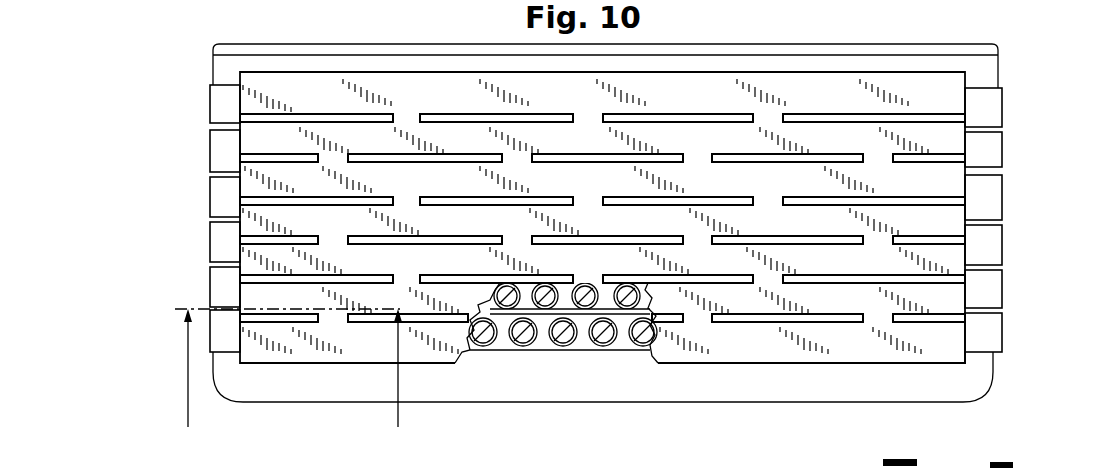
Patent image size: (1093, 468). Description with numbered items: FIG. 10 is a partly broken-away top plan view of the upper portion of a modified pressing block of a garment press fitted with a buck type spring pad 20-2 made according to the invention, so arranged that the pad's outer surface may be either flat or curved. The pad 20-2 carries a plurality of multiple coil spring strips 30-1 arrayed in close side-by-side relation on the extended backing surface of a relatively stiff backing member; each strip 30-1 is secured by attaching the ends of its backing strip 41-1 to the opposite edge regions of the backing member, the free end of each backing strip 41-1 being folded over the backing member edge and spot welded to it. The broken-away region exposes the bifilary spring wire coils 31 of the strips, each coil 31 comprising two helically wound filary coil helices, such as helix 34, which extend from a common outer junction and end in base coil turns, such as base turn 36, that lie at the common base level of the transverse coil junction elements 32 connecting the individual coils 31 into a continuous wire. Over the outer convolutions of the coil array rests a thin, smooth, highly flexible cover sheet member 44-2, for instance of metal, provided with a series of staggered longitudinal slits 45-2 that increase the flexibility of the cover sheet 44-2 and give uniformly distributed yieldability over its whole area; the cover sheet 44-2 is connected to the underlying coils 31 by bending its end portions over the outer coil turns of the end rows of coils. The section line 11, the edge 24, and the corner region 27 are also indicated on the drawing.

The buck type spring pad 20-2 is at (742, 35).
The top plate 24 is at (827, 70).
The housing bottom 27 is at (232, 383).
The multiple coil spring strip 30-1 is at (1012, 104).
The bifilary spring wire coil 31 is at (483, 348).
The coil junction element 32 is at (460, 97).
The filary coil helix 34 is at (510, 117).
The base coil turn 36 is at (967, 357).
The backing strip 41-1 is at (222, 107).
The cover sheet member 44-2 is at (257, 220).
The longitudinal slit 45-2 is at (905, 283).
The section line 11 is at (290, 381).